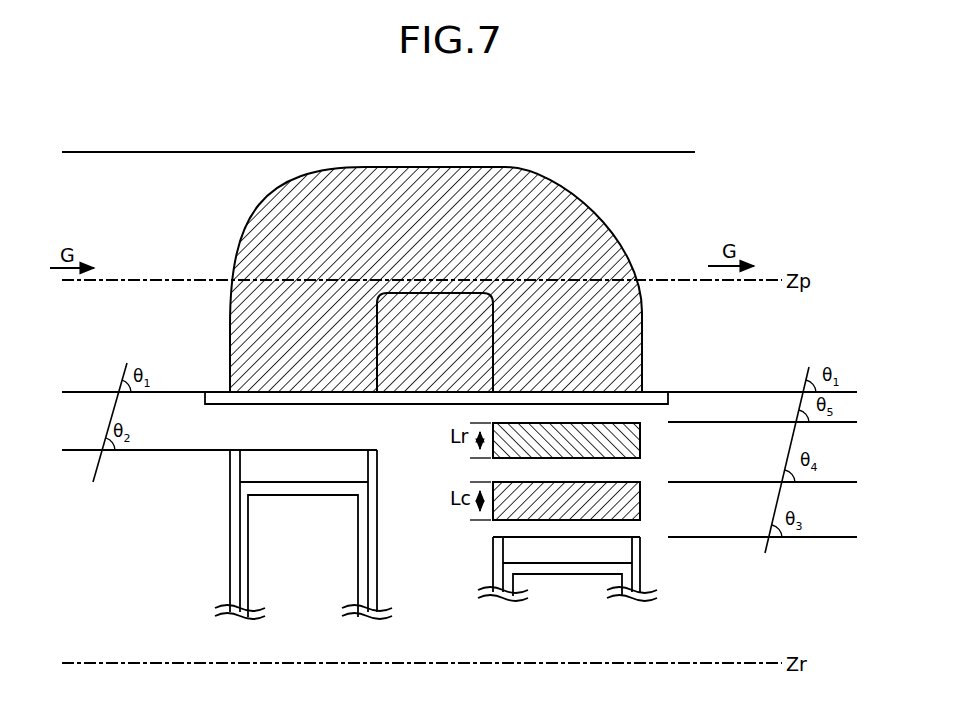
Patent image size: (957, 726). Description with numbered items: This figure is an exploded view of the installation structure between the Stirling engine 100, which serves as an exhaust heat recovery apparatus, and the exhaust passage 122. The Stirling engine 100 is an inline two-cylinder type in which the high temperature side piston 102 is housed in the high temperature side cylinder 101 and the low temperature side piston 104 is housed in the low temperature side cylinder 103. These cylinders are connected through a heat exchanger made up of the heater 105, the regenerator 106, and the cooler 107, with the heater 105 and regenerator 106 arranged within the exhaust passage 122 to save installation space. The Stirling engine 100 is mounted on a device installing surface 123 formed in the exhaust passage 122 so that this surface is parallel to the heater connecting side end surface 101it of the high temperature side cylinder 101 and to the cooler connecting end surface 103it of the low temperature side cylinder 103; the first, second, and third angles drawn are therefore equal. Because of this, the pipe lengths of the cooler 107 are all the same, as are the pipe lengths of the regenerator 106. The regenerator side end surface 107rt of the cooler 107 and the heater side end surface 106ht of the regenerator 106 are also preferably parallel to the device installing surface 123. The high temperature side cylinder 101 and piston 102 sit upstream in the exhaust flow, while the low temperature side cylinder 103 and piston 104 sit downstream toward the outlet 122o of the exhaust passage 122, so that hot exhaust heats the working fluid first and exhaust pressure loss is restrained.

The Stirling engine 100 is at (188, 522).
The high temperature side cylinder 101 is at (377, 548).
The heater connecting side end surface 101it is at (318, 455).
The high temperature side piston 102 is at (244, 562).
The low temperature side cylinder 103 is at (494, 573).
The cooler connecting end surface 103it is at (594, 541).
The low temperature side piston 104 is at (638, 590).
The heater 105 is at (597, 218).
The regenerator 106 is at (641, 442).
The heater side end surface 106ht is at (503, 421).
The cooler 107 is at (641, 495).
The regenerator side end surface 107rt is at (500, 480).
The exhaust passage 122 is at (620, 152).
The outlet 122o is at (765, 166).
The device installing surface 123 is at (662, 392).